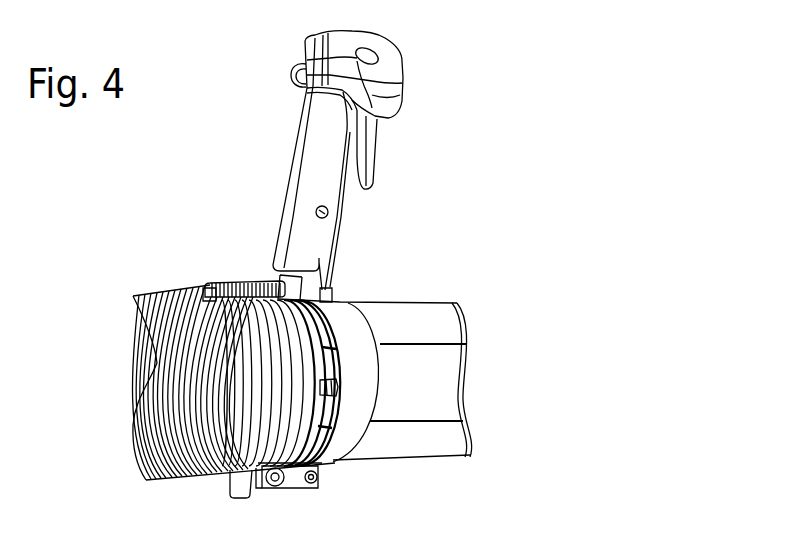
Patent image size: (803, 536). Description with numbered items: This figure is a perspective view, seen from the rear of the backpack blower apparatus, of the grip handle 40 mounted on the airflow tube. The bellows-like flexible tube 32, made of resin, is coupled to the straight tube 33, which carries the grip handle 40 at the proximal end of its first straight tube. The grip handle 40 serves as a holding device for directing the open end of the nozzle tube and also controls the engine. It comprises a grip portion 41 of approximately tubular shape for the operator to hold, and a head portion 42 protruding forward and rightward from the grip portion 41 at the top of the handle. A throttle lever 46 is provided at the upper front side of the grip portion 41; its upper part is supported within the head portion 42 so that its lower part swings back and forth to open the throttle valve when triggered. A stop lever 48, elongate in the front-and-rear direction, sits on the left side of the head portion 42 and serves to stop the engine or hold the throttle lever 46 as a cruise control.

The flexible tube 32 is at (165, 308).
The straight tube 33 is at (423, 315).
The grip handle 40 is at (350, 157).
The grip portion 41 is at (293, 168).
The head portion 42 is at (404, 88).
The throttle lever 46 is at (372, 160).
The stop lever 48 is at (290, 73).